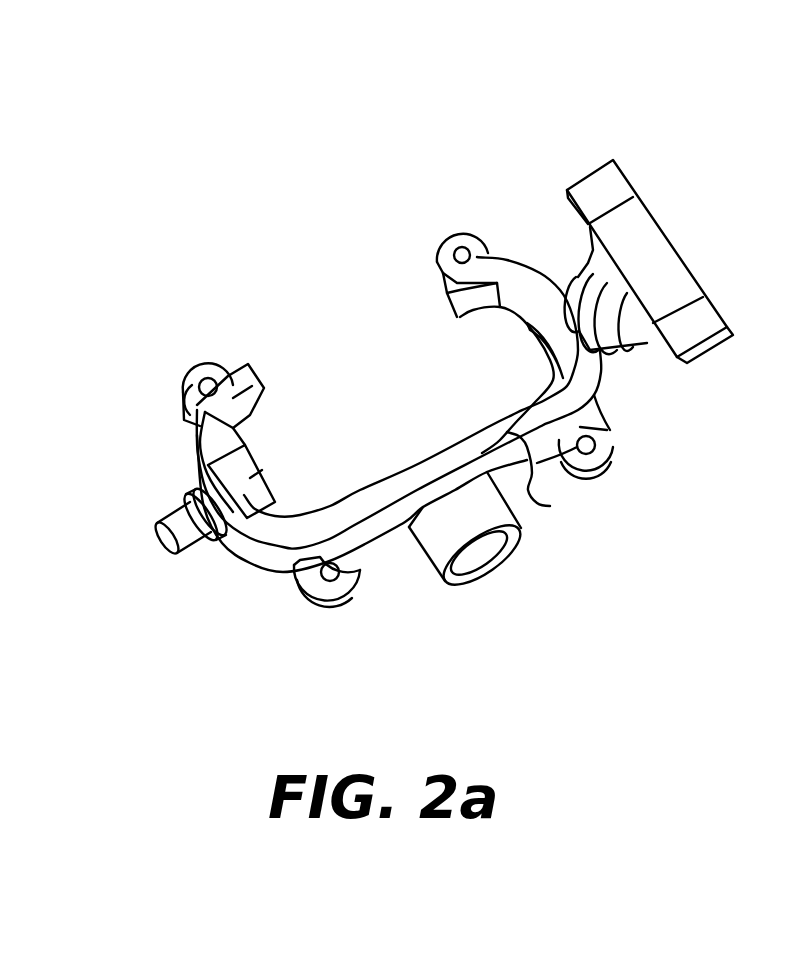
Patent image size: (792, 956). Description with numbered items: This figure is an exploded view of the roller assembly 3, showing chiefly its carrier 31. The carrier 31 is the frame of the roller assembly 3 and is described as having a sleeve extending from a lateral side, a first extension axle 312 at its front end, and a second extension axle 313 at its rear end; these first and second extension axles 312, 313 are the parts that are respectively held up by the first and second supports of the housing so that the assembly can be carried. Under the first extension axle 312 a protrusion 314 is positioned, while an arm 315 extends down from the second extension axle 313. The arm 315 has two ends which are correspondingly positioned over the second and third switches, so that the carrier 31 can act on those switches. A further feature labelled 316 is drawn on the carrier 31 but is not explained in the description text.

The roller assembly 3 is at (366, 274).
The carrier 31 is at (550, 506).
The first extension axle 312 is at (175, 492).
The second extension axle 313 is at (572, 292).
The protrusion 314 is at (262, 502).
The arm 315 is at (617, 187).
The mounting lug 316 is at (606, 437).